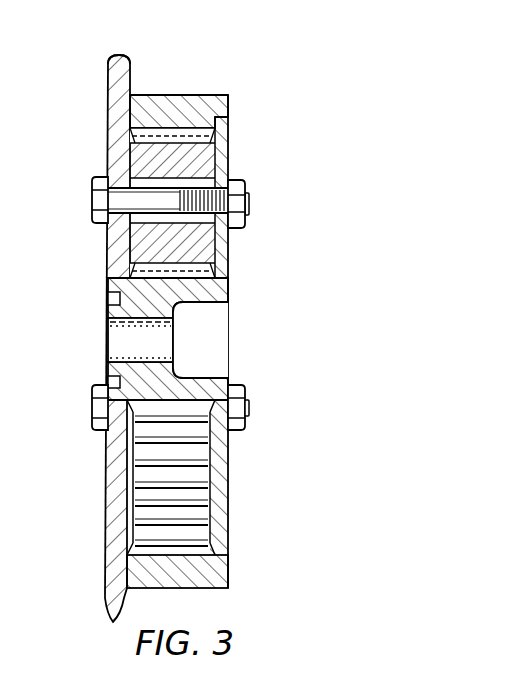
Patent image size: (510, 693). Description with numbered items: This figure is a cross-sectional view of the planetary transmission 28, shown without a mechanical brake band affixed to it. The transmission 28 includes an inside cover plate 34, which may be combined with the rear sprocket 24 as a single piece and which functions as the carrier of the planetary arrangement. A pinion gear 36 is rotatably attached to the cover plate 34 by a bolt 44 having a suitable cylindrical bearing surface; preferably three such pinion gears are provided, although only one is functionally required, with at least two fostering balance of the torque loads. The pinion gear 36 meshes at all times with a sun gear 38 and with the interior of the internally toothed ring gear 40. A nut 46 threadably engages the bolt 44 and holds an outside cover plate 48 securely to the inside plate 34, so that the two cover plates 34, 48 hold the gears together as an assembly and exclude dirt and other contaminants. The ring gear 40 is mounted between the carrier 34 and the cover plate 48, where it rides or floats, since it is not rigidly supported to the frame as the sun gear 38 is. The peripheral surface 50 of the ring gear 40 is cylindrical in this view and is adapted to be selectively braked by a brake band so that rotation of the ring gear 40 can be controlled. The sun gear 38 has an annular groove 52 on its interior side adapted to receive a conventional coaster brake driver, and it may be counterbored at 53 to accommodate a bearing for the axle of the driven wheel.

The rear sprocket 24 is at (115, 76).
The transmission 28 is at (200, 69).
The inside cover plate 34 is at (111, 150).
The pinion gear 36 is at (228, 170).
The sun gear 38 is at (220, 290).
The ring gear 40 is at (228, 578).
The bolt 44 is at (250, 206).
The nut 46 is at (242, 186).
The outside cover plate 48 is at (222, 500).
The peripheral surface 50 is at (212, 97).
The annular groove 52 is at (107, 298).
The counterbore 53 is at (209, 344).